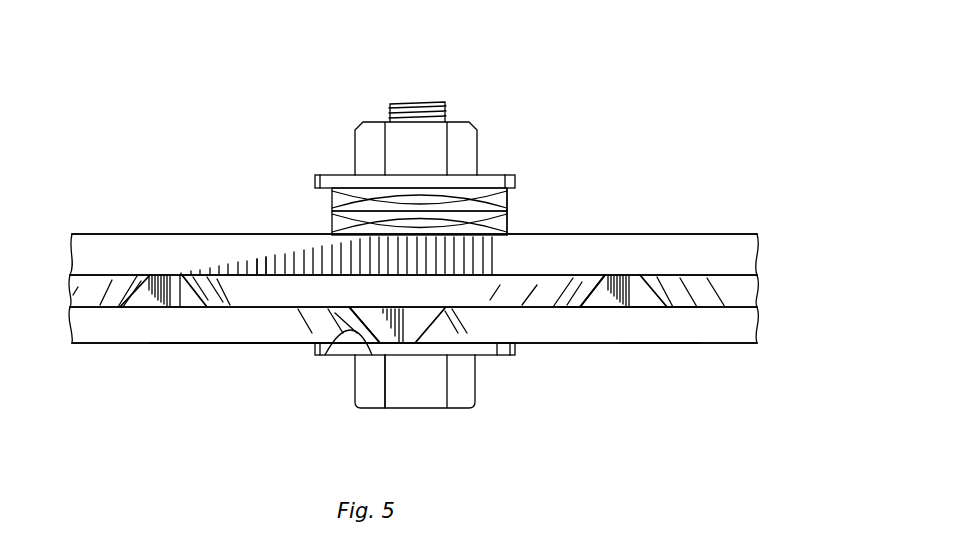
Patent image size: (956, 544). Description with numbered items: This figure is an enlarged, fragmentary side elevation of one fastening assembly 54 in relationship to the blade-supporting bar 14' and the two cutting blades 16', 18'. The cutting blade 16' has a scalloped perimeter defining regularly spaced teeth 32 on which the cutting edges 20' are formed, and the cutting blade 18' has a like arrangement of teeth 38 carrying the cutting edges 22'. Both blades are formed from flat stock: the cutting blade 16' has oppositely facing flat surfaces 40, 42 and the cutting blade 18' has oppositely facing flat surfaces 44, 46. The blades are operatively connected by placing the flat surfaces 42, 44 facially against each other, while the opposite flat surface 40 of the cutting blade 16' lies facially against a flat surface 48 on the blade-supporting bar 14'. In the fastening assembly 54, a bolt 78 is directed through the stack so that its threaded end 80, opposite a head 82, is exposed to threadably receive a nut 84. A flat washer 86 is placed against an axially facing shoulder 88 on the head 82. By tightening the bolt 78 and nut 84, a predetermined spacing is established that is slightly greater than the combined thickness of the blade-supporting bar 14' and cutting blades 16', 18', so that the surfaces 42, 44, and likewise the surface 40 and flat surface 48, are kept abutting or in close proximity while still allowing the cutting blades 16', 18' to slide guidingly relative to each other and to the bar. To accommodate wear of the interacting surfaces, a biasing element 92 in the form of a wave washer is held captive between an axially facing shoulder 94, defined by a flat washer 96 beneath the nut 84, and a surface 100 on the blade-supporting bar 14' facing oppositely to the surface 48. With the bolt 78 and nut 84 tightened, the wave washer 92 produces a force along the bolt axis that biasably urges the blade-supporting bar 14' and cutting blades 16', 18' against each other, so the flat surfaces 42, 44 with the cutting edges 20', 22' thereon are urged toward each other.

The surface 100 is at (112, 233).
The blade-supporting bar 14' is at (427, 218).
The cutting blade 16' is at (458, 297).
The cutting blade 18' is at (415, 362).
The cutting edges 20' is at (630, 361).
The cutting edges 22' is at (275, 375).
The flat surface 46 is at (207, 343).
The flat surface 42 is at (652, 310).
The teeth 32 is at (165, 307).
The flat surface 40 is at (583, 275).
The flat surface 44 is at (180, 275).
The flat surface 48 is at (262, 275).
The teeth 38 is at (427, 307).
The axially facing shoulder 88 is at (335, 344).
The fastening assembly 54 is at (530, 102).
The threaded end 80 is at (445, 104).
The nut 84 is at (372, 137).
The flat washer 96 is at (335, 178).
The axially facing shoulder 94 is at (332, 208).
The biasing element 92 is at (507, 212).
The flat washer 86 is at (497, 350).
The bolt 78 is at (417, 397).
The head 82 is at (402, 375).